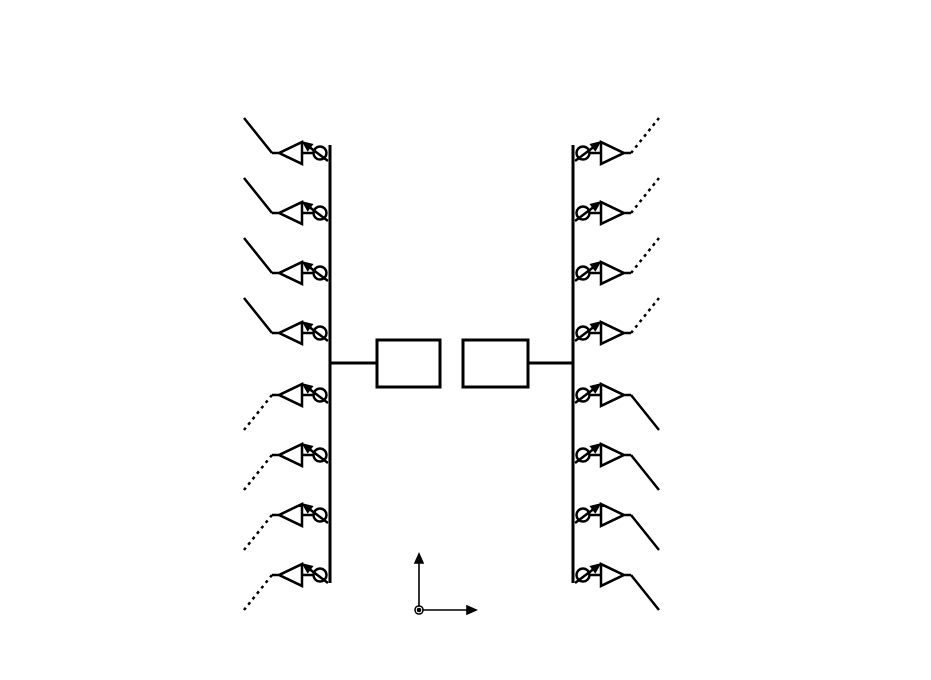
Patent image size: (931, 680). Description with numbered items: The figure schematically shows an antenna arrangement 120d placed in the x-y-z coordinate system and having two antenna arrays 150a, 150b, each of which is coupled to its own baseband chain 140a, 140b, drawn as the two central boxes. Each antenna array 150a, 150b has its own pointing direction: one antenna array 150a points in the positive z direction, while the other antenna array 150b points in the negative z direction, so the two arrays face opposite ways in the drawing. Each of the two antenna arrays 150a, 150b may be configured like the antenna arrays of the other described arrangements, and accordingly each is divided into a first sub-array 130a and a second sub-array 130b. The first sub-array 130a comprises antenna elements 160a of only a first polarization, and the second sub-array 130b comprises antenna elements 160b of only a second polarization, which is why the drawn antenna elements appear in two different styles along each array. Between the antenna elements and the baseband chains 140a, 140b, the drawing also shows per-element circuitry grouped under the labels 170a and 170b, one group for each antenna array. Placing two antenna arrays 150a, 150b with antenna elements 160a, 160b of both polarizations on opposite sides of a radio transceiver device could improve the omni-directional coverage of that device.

The antenna arrangement 120d is at (153, 68).
The antenna array 150a is at (632, 101).
The antenna array 150b is at (275, 103).
The first RF front-end chain (phase shifters and amplifiers) 170a is at (627, 133).
The second RF front-end chain (phase shifters and amplifiers) 170b is at (370, 133).
The first sub-array 130a is at (177, 117).
The second sub-array 130b is at (177, 377).
The antenna elements 160a is at (260, 138).
The antenna elements 160b is at (647, 133).
The baseband chain 140a is at (497, 387).
The baseband chain 140b is at (416, 387).